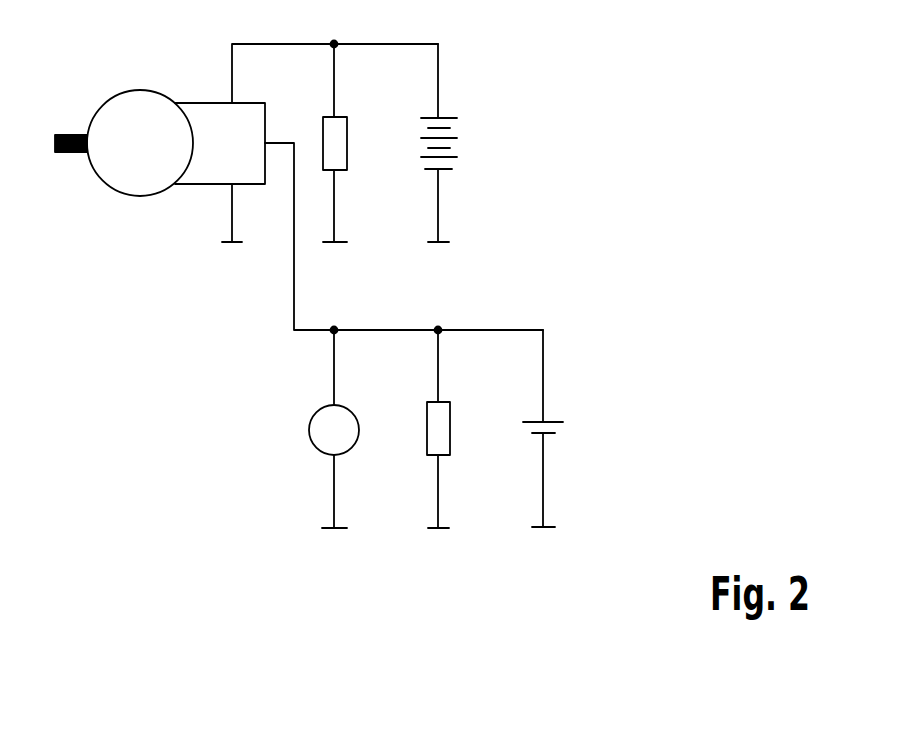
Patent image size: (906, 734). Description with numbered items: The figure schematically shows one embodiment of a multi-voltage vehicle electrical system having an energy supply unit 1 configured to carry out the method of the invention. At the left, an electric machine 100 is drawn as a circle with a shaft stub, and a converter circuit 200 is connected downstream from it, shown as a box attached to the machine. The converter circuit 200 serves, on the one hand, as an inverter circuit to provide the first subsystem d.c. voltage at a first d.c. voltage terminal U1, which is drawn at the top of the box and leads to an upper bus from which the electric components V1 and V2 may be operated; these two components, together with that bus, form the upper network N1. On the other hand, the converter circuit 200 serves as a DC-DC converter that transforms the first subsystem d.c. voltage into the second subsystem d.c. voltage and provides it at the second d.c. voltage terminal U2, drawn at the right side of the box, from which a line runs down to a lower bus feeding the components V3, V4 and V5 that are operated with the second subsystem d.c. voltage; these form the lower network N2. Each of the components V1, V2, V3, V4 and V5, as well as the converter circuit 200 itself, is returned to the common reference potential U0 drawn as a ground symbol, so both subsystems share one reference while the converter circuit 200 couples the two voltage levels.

The energy supply unit 1 is at (160, 170).
The electric machine 100 is at (138, 90).
The converter circuit 200 is at (200, 103).
The reference potential U0 is at (403, 368).
The first d.c. voltage terminal U1 is at (335, 73).
The second d.c. voltage terminal U2 is at (404, 216).
The electric component V1 is at (352, 143).
The electric component V2 is at (456, 143).
The component V3 is at (351, 429).
The component V4 is at (455, 429).
The component V5 is at (559, 428).
The first network N1 is at (528, 142).
The second network N2 is at (522, 428).